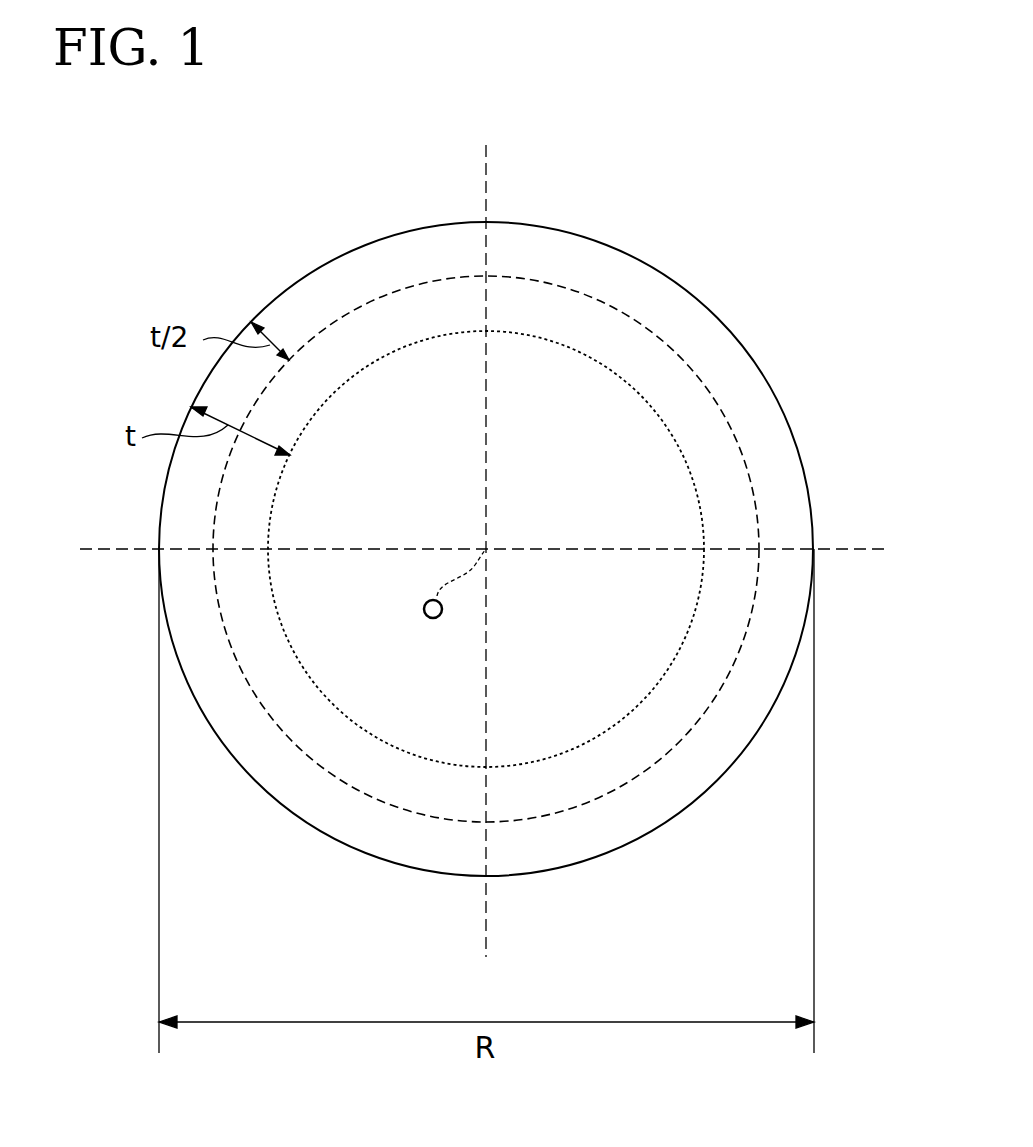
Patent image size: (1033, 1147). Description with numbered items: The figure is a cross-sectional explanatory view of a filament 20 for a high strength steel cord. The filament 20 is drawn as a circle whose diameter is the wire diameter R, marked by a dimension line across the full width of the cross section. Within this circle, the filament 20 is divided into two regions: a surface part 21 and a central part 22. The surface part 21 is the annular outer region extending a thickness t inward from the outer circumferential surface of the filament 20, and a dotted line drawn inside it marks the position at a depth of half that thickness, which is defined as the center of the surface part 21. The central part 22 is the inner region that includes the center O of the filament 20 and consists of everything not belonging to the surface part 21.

The filament for a high strength steel cord 20 is at (486, 526).
The surface part 21 is at (565, 255).
The central part 22 is at (407, 682).